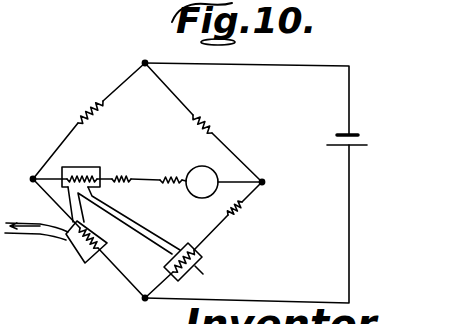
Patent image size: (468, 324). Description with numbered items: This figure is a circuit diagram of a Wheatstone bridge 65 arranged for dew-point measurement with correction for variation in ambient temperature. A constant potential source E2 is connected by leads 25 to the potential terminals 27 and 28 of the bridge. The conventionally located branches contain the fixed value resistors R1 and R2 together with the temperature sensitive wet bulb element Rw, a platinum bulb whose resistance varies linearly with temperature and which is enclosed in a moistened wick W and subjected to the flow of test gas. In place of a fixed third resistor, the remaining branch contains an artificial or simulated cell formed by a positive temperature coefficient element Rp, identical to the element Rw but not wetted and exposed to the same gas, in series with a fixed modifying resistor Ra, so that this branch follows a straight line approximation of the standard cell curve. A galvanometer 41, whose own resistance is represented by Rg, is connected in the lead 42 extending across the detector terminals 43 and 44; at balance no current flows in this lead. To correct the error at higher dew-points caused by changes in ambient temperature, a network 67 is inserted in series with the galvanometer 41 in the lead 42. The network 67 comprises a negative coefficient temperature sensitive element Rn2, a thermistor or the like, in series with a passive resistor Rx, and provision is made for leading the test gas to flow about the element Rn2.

The potential terminal 27 is at (143, 51).
The potential terminal 28 is at (142, 301).
The lead 42 is at (52, 176).
The detector terminal 44 is at (262, 182).
The detector terminal 43 is at (33, 179).
The lead 25 is at (299, 64).
The battery E2 is at (336, 131).
The bridge 65 is at (148, 121).
The fixed value resistor R2 is at (78, 121).
The fixed value resistor R1 is at (215, 114).
The fixed modifying resistor Ra is at (240, 212).
The negative coefficient temperature sensitive element Rn2 is at (84, 167).
The passive resistor Rx is at (126, 172).
The galvanometer resistance Rg is at (166, 177).
The galvanometer 41 is at (213, 161).
The temperature sensitive element Rw is at (82, 266).
The moistened wick W is at (68, 249).
The positive temperature coefficient element Rp is at (201, 262).
The network 67 is at (76, 205).